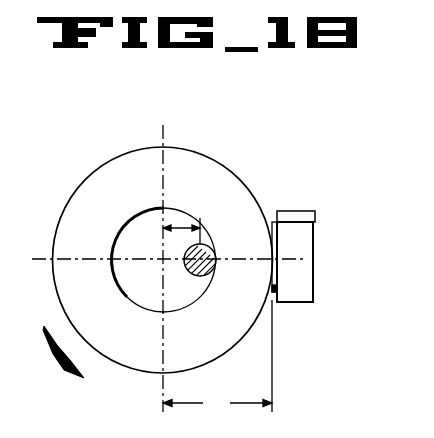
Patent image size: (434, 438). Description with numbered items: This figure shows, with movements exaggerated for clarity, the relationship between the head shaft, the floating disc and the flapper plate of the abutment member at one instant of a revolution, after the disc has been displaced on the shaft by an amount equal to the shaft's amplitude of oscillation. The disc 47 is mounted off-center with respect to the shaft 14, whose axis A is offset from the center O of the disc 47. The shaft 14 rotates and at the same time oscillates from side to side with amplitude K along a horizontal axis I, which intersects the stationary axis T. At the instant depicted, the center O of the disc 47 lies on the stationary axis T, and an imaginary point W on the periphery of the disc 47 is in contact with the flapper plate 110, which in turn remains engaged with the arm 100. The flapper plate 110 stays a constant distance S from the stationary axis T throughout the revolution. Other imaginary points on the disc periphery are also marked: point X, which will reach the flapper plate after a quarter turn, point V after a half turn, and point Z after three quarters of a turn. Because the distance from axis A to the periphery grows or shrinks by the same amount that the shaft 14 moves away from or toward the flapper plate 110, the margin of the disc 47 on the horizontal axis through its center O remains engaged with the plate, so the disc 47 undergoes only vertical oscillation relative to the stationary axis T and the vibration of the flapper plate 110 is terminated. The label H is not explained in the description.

The disc 47 is at (248, 188).
The flapper plate 110 is at (271, 222).
The arm 100 is at (305, 249).
The shaft 14 is at (202, 273).
The amplitude of oscillation K is at (188, 226).
The distance S is at (217, 358).
The imaginary point X is at (163, 147).
The axis of shaft A is at (208, 250).
The imaginary point V is at (53, 258).
The point H is at (120, 258).
The horizontal axis I is at (69, 262).
The stationary axis T is at (163, 259).
The center of the disc O is at (164, 262).
The imaginary point W is at (271, 262).
The imaginary point Z is at (160, 374).